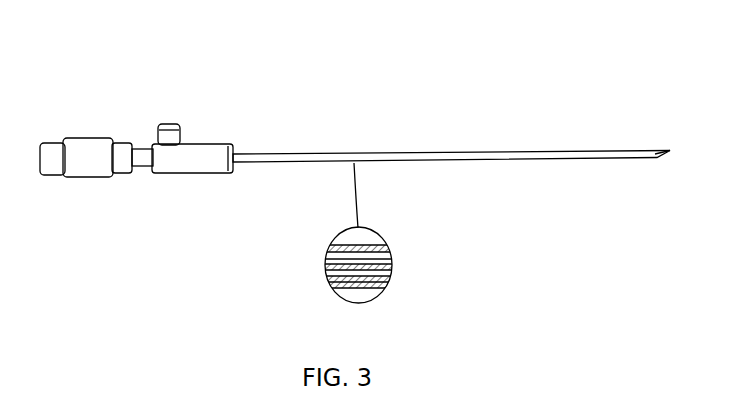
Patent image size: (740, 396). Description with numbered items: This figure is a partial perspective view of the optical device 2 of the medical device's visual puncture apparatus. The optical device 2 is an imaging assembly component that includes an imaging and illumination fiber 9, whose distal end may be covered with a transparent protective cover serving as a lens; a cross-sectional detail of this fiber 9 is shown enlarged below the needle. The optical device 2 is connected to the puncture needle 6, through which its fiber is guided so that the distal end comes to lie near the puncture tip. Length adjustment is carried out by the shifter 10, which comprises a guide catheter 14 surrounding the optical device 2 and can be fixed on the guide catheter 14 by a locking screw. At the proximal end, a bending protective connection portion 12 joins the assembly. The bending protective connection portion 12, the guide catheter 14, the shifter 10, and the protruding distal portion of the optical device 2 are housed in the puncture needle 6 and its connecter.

The optical device 2 is at (299, 128).
The puncture needle 6 is at (406, 153).
The imaging and illumination fiber 9 is at (392, 266).
The shifter 10 is at (212, 144).
The bending protective connection portion 12 is at (92, 137).
The guide catheter 14 is at (139, 148).